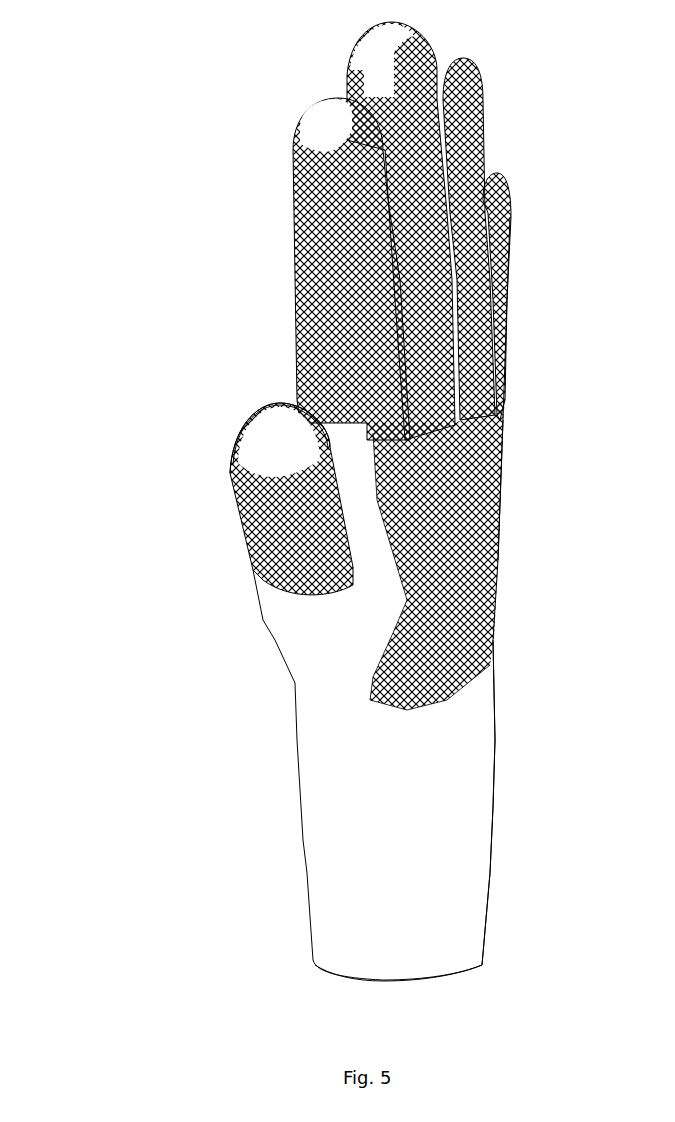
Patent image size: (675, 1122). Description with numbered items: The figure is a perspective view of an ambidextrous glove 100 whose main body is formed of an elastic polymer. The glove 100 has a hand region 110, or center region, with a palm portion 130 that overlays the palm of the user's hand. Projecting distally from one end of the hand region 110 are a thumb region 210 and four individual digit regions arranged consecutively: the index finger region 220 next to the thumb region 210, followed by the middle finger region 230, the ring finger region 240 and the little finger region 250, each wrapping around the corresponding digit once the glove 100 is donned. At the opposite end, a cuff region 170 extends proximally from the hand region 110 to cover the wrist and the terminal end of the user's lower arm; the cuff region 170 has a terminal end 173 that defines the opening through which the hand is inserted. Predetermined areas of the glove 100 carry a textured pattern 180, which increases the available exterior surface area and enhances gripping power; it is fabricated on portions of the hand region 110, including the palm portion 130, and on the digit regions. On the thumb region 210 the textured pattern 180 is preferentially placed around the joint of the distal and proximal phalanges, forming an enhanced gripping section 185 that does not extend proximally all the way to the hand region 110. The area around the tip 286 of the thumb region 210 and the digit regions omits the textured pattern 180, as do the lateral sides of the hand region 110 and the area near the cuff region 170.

The glove 100 is at (117, 260).
The hand region 110 is at (310, 697).
The palm portion 130 is at (493, 543).
The cuff region 170 is at (340, 898).
The terminal end 173 is at (458, 962).
The textured pattern 180 is at (473, 470).
The enhanced gripping section 185 is at (266, 566).
The thumb region 210 is at (255, 532).
The index finger region 220 is at (310, 178).
The middle finger region 230 is at (382, 55).
The ring finger region 240 is at (470, 102).
The little finger region 250 is at (495, 282).
The tip 286 is at (247, 430).